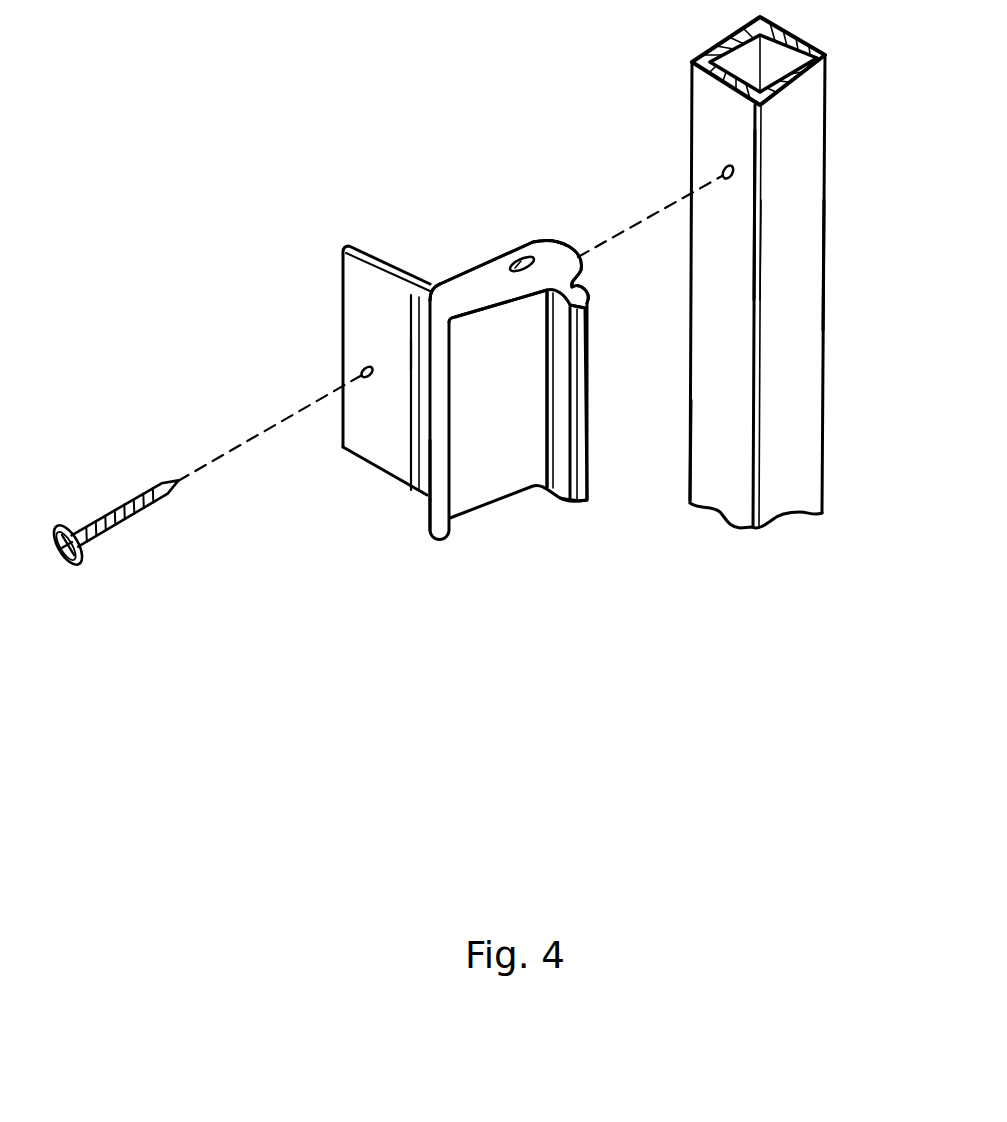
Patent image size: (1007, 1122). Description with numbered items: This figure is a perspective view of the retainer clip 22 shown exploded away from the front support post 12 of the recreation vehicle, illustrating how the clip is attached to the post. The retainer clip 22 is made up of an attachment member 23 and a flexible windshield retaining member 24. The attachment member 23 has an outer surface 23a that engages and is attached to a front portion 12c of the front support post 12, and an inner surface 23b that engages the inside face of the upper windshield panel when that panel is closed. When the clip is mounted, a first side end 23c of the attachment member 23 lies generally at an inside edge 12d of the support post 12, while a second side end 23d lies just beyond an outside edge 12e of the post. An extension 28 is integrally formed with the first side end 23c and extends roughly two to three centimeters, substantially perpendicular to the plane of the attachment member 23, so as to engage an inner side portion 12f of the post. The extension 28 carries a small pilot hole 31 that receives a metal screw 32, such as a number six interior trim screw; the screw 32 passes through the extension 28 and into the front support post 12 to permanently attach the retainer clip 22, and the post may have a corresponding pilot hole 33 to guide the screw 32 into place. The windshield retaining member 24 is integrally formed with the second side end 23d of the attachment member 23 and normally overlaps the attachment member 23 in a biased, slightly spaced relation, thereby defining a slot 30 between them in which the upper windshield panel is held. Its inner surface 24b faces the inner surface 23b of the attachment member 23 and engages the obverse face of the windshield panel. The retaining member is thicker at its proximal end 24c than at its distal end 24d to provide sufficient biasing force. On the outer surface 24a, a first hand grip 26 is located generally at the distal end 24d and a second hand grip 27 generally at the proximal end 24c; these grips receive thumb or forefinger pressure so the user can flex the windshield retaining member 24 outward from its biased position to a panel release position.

The front support post 12 is at (813, 130).
The front portion of the front support post 12c is at (797, 213).
The inside edge of the support post 12d is at (757, 257).
The outside edge of the support post 12e is at (827, 290).
The inner side portion of the front support post 12f is at (702, 405).
The retainer clip 22 is at (423, 374).
The attachment member 23 is at (480, 277).
The outer surface of the attachment member 23a is at (457, 277).
The inner surface of the attachment member 23b is at (527, 257).
The first side end of the attachment member 23c is at (430, 277).
The second side end of the attachment member 23d is at (550, 248).
The windshield retaining member 24 is at (444, 476).
The outer surface of the windshield retaining member 24a is at (512, 398).
The inner surface of the windshield retaining member 24b is at (423, 520).
The proximal end of the windshield retaining member 24c is at (547, 483).
The distal end of the windshield retaining member 24d is at (423, 480).
The first hand grip 26 is at (443, 542).
The second hand grip 27 is at (573, 503).
The extension 28 is at (365, 320).
The slot 30 is at (427, 357).
The pilot hole 31 is at (363, 382).
The metal screw 32 is at (128, 520).
The pilot hole 33 is at (727, 162).